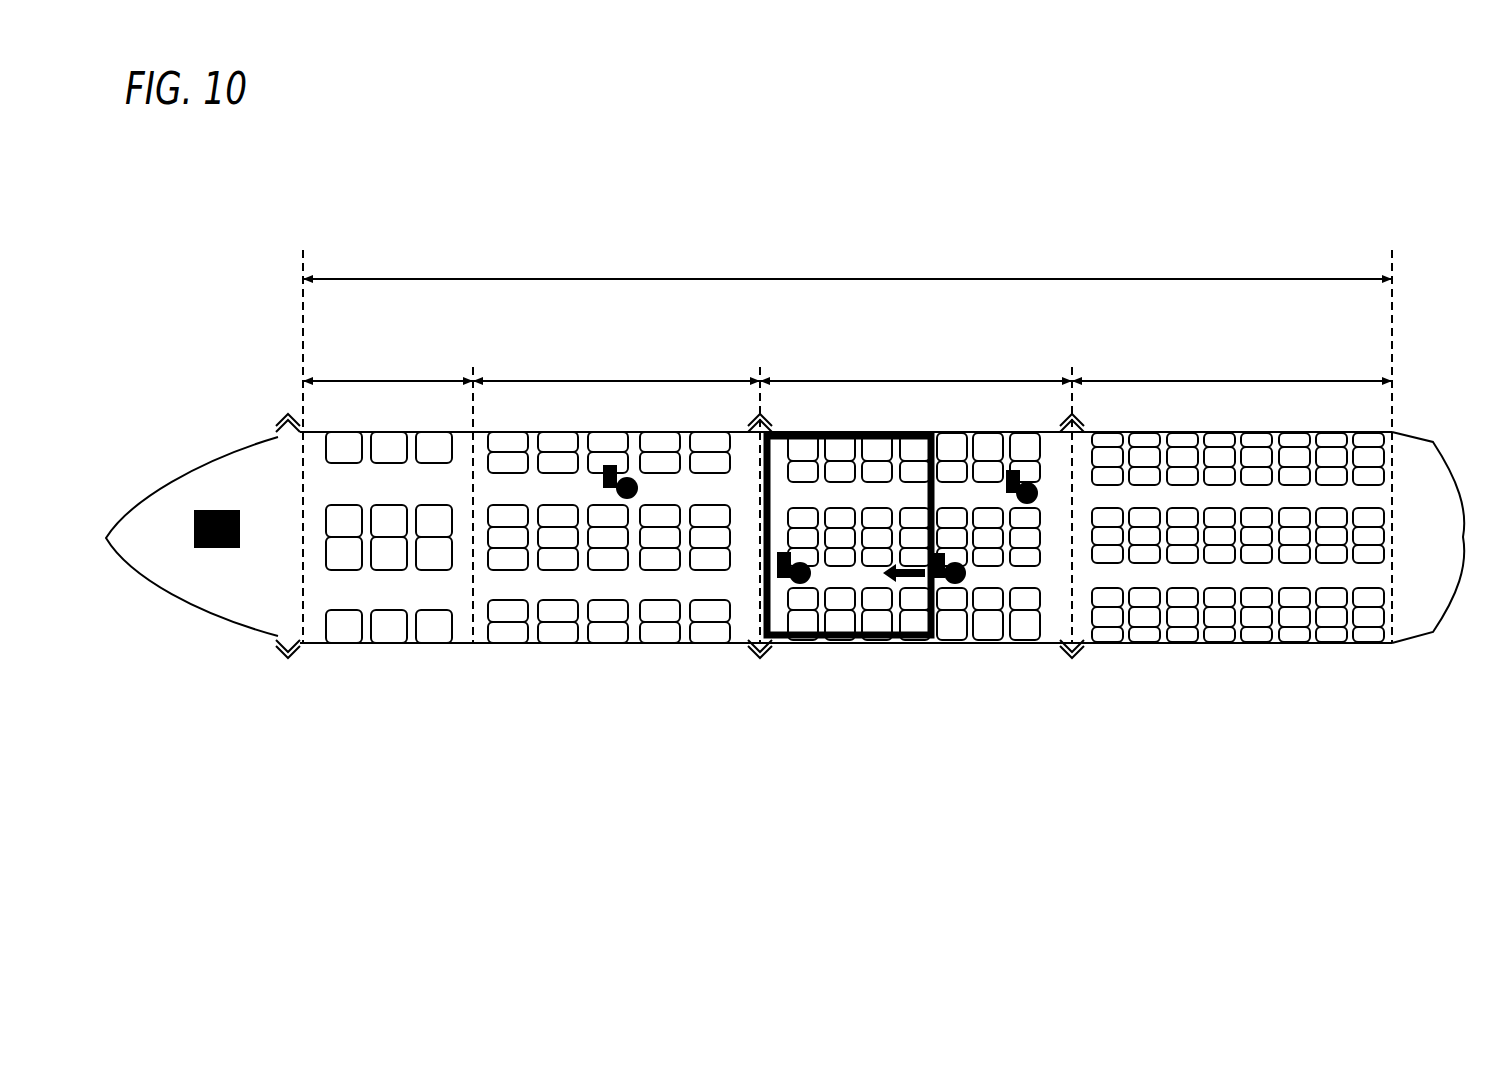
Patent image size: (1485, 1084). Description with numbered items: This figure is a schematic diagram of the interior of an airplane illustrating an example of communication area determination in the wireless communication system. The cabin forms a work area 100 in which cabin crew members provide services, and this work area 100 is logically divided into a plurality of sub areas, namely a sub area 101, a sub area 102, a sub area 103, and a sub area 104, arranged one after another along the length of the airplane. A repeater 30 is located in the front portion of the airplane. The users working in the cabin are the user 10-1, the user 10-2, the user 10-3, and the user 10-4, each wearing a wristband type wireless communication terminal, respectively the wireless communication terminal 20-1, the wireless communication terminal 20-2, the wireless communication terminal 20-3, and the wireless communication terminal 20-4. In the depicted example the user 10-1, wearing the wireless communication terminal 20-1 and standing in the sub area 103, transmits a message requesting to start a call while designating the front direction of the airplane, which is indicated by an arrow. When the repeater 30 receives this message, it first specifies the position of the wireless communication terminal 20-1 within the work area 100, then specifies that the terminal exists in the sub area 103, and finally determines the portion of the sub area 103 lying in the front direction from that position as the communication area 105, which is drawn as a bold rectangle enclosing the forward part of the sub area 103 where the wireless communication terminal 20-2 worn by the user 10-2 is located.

The work area 100 is at (847, 229).
The sub area 101 is at (393, 466).
The sub area 102 is at (616, 466).
The sub area 103 is at (916, 465).
The sub area 104 is at (1232, 466).
The communication area 105 is at (849, 622).
The repeater 30 is at (192, 476).
The user 10-1 is at (1058, 655).
The user 10-2 is at (735, 655).
The user 10-3 is at (1094, 448).
The user 10-4 is at (673, 445).
The wireless communication terminal 20-1 is at (966, 651).
The wireless communication terminal 20-2 is at (664, 650).
The wireless communication terminal 20-3 is at (963, 442).
The wireless communication terminal 20-4 is at (567, 438).